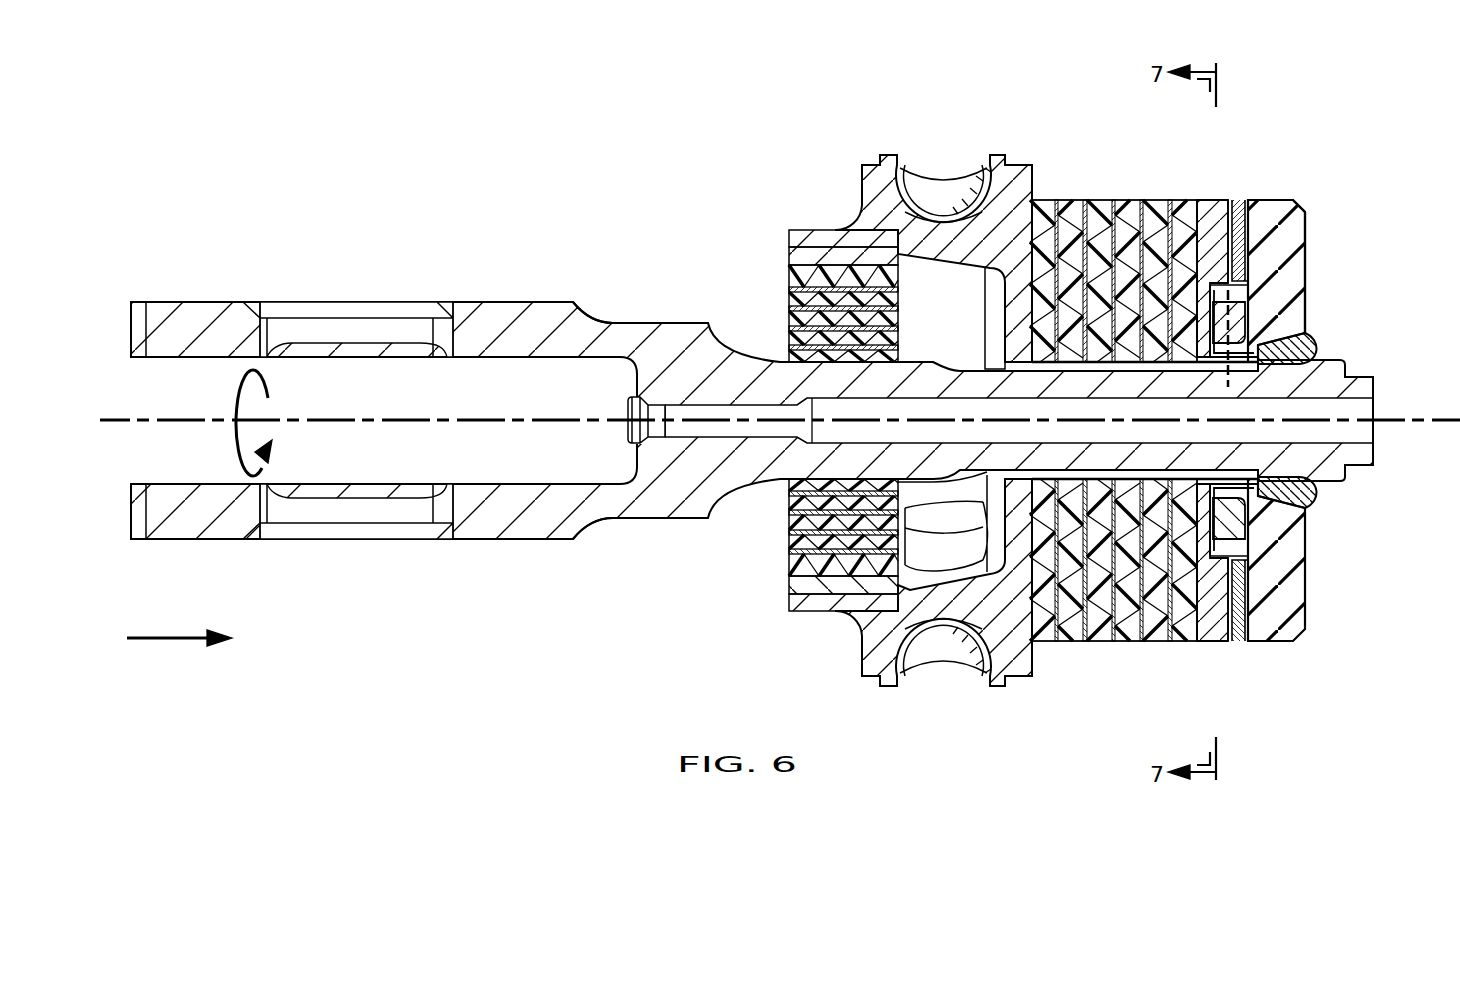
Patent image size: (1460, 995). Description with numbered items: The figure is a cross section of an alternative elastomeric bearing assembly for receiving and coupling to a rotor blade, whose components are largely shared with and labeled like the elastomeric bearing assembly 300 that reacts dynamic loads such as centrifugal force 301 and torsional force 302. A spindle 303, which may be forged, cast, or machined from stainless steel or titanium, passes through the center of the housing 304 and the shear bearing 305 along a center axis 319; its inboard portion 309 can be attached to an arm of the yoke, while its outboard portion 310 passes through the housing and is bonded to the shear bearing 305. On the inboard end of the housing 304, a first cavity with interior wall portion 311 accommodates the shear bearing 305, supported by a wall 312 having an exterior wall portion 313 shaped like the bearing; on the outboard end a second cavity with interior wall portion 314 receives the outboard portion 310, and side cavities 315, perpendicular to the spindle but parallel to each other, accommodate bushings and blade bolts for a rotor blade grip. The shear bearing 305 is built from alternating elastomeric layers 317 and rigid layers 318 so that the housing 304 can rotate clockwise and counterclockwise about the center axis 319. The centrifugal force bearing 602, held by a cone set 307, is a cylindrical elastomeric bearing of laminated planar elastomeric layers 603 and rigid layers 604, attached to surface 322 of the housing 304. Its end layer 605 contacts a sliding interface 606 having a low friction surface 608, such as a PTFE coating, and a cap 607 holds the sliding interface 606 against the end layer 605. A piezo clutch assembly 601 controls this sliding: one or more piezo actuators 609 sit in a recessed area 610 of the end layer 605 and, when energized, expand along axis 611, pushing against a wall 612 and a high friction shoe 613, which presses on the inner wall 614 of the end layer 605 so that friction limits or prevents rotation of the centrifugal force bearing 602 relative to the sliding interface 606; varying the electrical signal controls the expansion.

The elastomeric bearing assembly 300 is at (482, 96).
The centrifugal force 301 is at (160, 642).
The torsional force 302 is at (238, 405).
The spindle 303 is at (637, 325).
The housing 304 is at (1020, 178).
The shear bearing 305 is at (760, 537).
The cone set 307 is at (1318, 497).
The inboard portion 309 is at (525, 540).
The outboard portion 310 is at (1373, 455).
The interior wall portion 311 is at (790, 580).
The wall 312 is at (837, 605).
The exterior wall portion 313 is at (792, 613).
The interior wall portion 314 is at (1012, 352).
The cavities 315 is at (945, 185).
The elastomeric layers 317 is at (789, 245).
The rigid layers 318 is at (789, 285).
The center axis 319 is at (115, 425).
The surface 322 is at (1035, 667).
The piezo clutch assembly 601 is at (1277, 261).
The centrifugal force bearing 602 is at (1077, 183).
The elastomeric layers 603 is at (1125, 205).
The rigid layers 604 is at (1160, 205).
The end layer 605 is at (1213, 632).
The sliding interface 606 is at (1268, 200).
The cap 607 is at (1302, 233).
The low friction surface 608 is at (1237, 200).
The piezo actuator 609 is at (1240, 315).
The recessed area 610 is at (1195, 520).
The axis 611 is at (1228, 382).
The wall 612 is at (1233, 493).
The high friction shoe 613 is at (1252, 298).
The inner wall 614 is at (1250, 540).